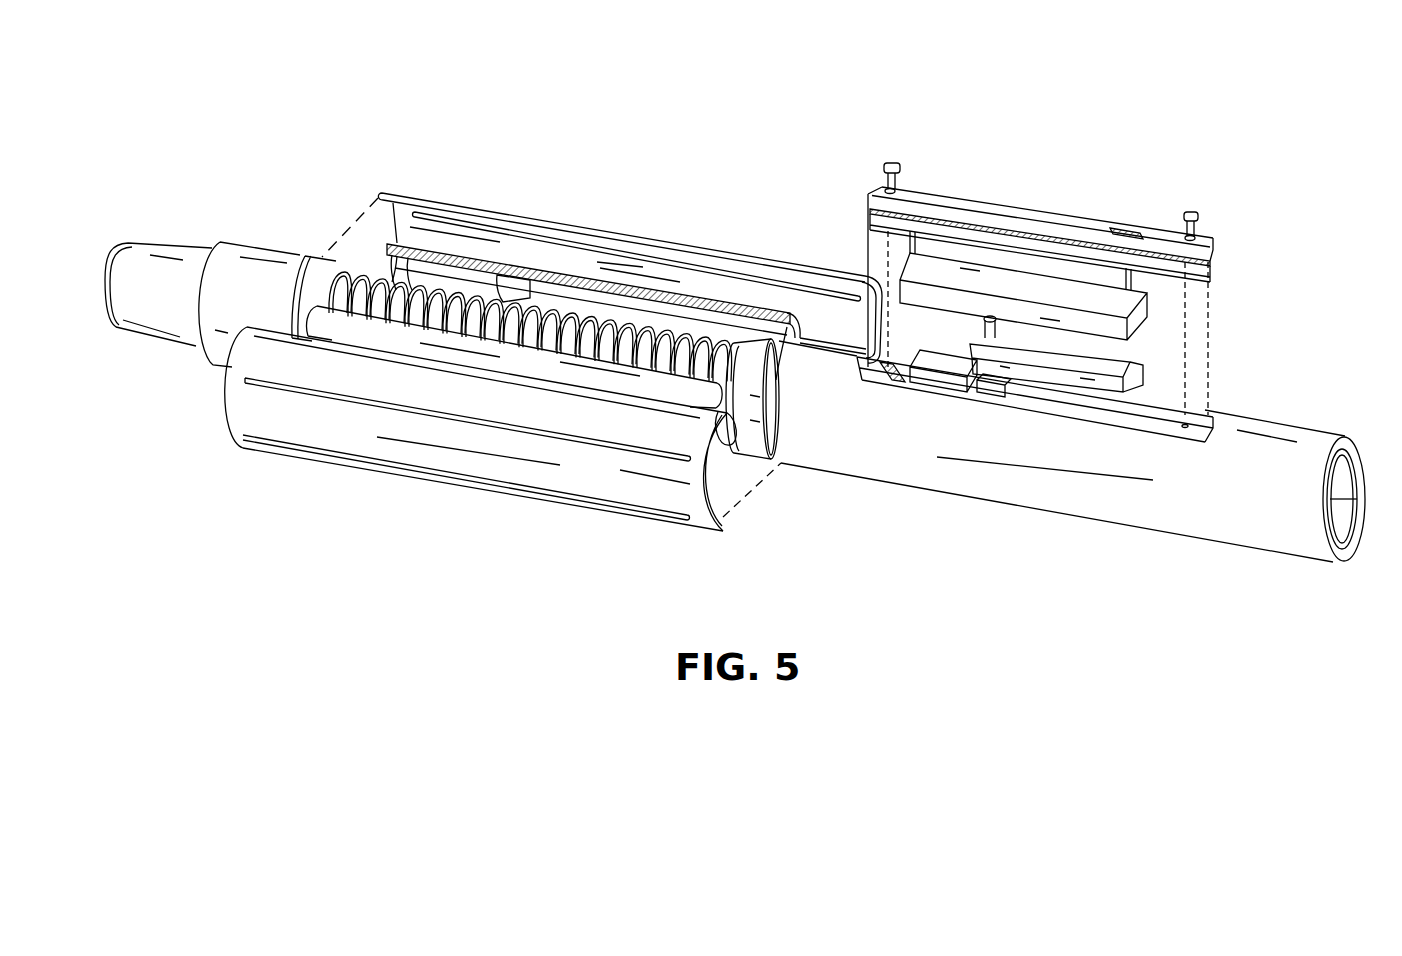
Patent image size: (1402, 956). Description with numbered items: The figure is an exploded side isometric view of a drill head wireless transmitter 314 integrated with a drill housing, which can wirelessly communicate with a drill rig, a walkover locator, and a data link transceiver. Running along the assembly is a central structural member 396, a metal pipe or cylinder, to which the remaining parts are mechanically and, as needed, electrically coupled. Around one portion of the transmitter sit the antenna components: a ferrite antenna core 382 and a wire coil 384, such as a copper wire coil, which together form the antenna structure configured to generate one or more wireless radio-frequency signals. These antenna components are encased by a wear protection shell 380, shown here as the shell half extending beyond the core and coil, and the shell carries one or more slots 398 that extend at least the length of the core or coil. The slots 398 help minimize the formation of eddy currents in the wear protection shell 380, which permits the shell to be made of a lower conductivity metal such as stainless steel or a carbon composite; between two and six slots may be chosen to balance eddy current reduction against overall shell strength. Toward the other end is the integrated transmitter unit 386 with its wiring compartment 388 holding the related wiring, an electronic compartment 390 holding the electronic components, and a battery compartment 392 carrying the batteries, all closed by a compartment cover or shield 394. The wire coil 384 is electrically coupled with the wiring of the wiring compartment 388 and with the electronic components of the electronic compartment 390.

The drill head wireless transmitter 314 is at (300, 100).
The wear protection shell 380 is at (318, 432).
The ferrite antenna core 382 is at (590, 385).
The wire coil 384 is at (548, 310).
The integrated transmitter unit 386 is at (833, 447).
The wiring compartment 388 is at (935, 393).
The electronic compartment 390 is at (1040, 385).
The battery compartment 392 is at (1157, 430).
The compartment cover or shield 394 is at (1023, 213).
The central structural member 396 is at (620, 330).
The slots 398 is at (255, 383).